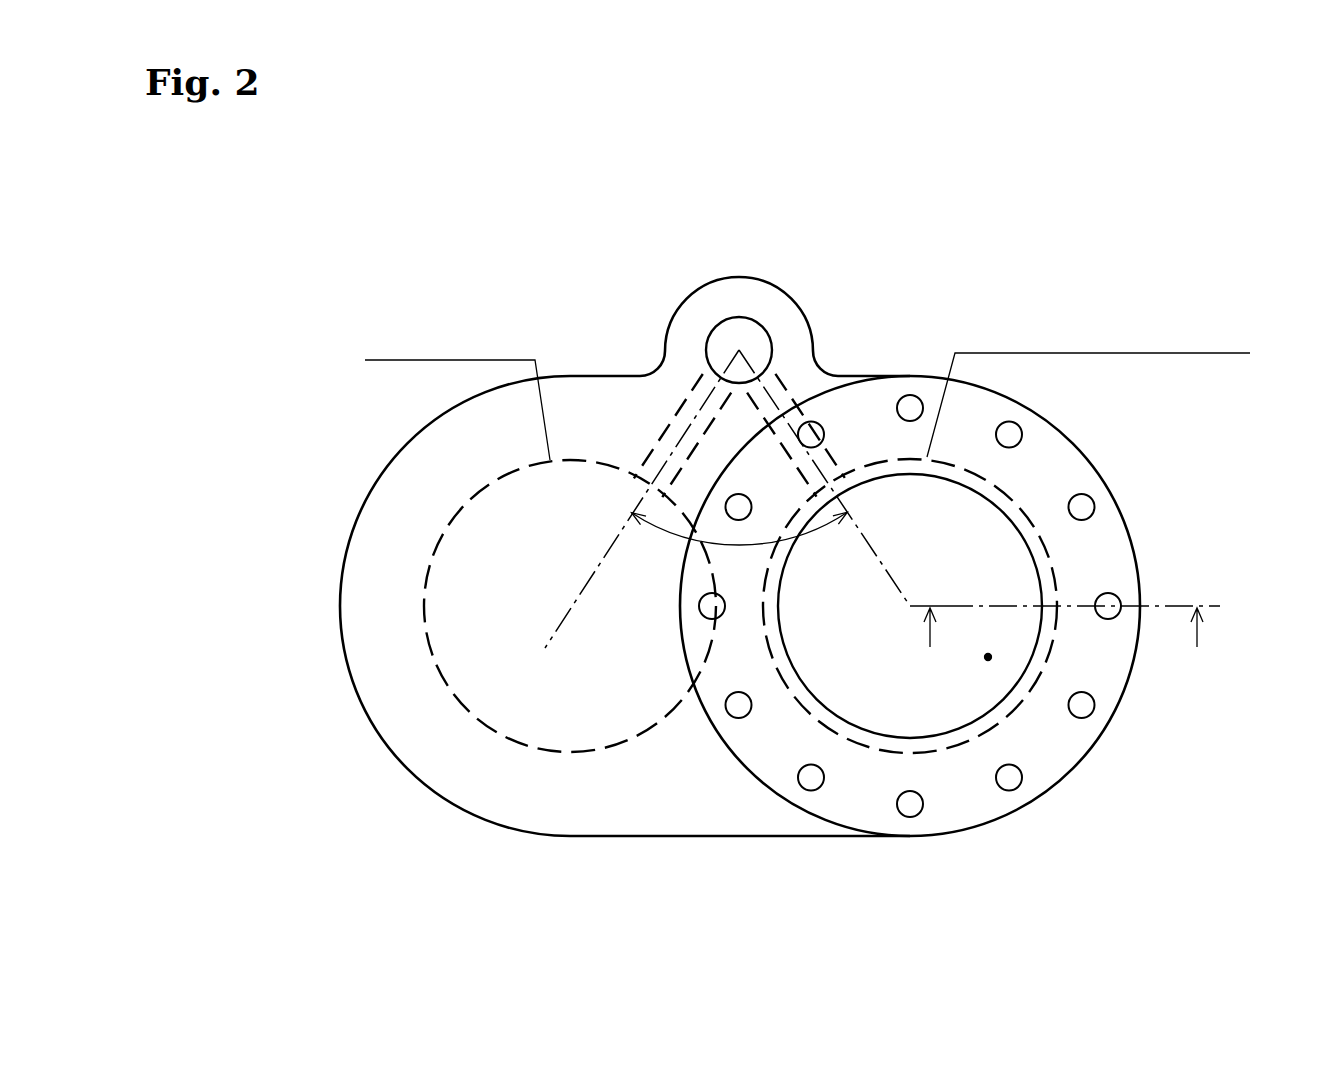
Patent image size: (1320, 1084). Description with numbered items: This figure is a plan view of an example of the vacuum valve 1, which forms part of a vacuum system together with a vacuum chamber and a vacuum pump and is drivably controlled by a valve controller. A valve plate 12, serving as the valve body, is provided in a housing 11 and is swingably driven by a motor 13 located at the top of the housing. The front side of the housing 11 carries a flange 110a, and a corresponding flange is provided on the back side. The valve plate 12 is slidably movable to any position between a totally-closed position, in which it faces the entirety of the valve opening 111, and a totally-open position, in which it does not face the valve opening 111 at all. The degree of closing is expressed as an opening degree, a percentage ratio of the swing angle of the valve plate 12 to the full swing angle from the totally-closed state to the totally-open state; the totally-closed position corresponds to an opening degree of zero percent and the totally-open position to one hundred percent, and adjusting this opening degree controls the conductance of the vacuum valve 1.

The vacuum valve 1 is at (751, 597).
The housing 11 is at (420, 765).
The valve plate 12 is at (800, 708).
The motor 13 is at (770, 333).
The flange 110a is at (983, 807).
The valve opening 111 is at (988, 657).